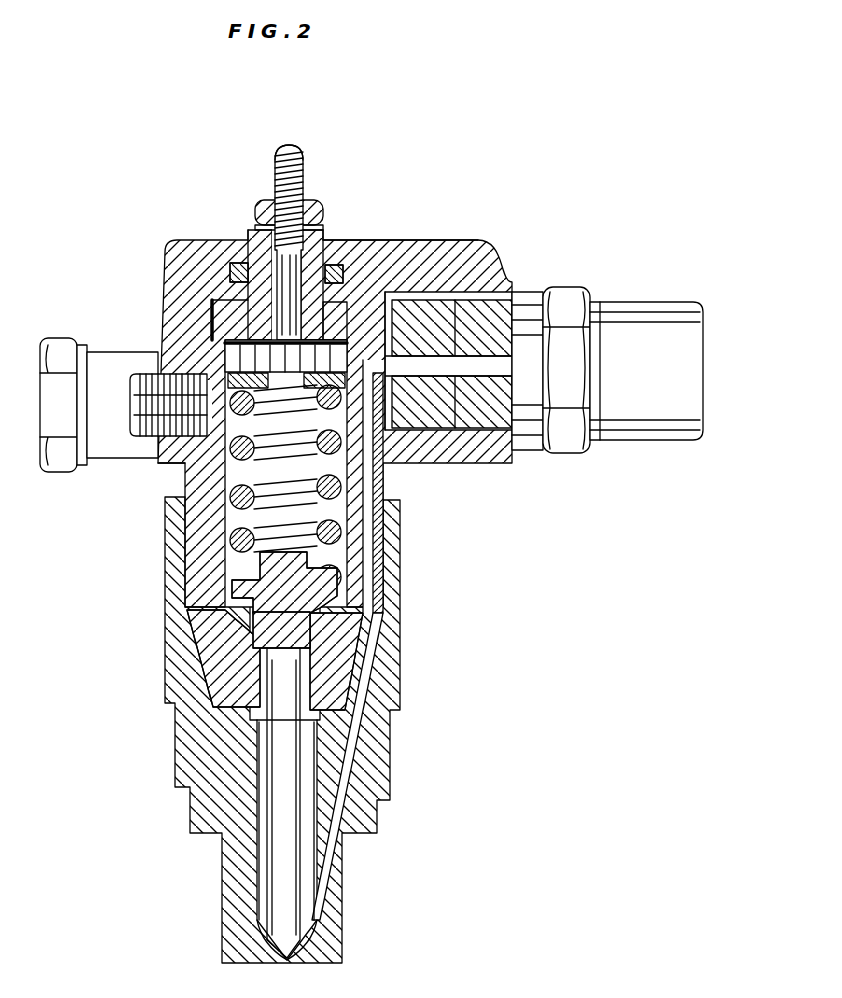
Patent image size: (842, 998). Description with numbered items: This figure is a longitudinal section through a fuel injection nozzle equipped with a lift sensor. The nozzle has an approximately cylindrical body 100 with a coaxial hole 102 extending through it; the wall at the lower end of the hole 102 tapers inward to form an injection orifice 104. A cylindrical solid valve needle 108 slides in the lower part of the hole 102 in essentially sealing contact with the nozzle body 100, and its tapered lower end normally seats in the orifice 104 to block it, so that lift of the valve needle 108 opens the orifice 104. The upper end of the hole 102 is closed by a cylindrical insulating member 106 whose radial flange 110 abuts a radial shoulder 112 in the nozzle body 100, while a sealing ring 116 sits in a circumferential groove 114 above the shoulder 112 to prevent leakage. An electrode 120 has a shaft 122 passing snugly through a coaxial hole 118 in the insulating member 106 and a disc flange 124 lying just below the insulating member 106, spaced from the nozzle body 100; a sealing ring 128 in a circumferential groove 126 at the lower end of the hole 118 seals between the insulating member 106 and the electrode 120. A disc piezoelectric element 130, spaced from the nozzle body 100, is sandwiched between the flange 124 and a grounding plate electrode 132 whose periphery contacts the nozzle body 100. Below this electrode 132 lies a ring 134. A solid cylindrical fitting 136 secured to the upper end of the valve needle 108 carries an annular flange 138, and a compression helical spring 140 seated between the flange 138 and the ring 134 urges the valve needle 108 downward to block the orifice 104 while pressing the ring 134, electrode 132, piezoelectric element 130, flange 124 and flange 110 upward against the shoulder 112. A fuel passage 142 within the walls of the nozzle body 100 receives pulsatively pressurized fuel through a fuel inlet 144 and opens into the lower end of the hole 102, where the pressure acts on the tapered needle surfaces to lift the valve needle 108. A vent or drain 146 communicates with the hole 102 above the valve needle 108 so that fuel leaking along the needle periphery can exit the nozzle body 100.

The nozzle body 100 is at (158, 272).
The coaxial hole 102 is at (222, 488).
The injection orifice 104 is at (287, 961).
The insulating member 106 is at (258, 258).
The valve needle 108 is at (302, 873).
The radial flange 110 is at (345, 330).
The radial shoulder 112 is at (238, 318).
The circumferential groove 114 is at (230, 272).
The sealing ring 116 is at (340, 310).
The coaxial hole 118 is at (272, 205).
The electrode 120 is at (318, 171).
The shaft 122 is at (300, 162).
The disc flange 124 is at (225, 350).
The circumferential groove 126 is at (215, 315).
The sealing ring 128 is at (332, 272).
The piezoelectric element 130 is at (445, 252).
The grounding plate electrode 132 is at (348, 418).
The ring 134 is at (178, 465).
The fitting 136 is at (313, 626).
The annular flange 138 is at (335, 587).
The compression helical spring 140 is at (320, 552).
The fuel passage 142 is at (333, 745).
The fuel inlet 144 is at (653, 430).
The vent or drain 146 is at (110, 400).